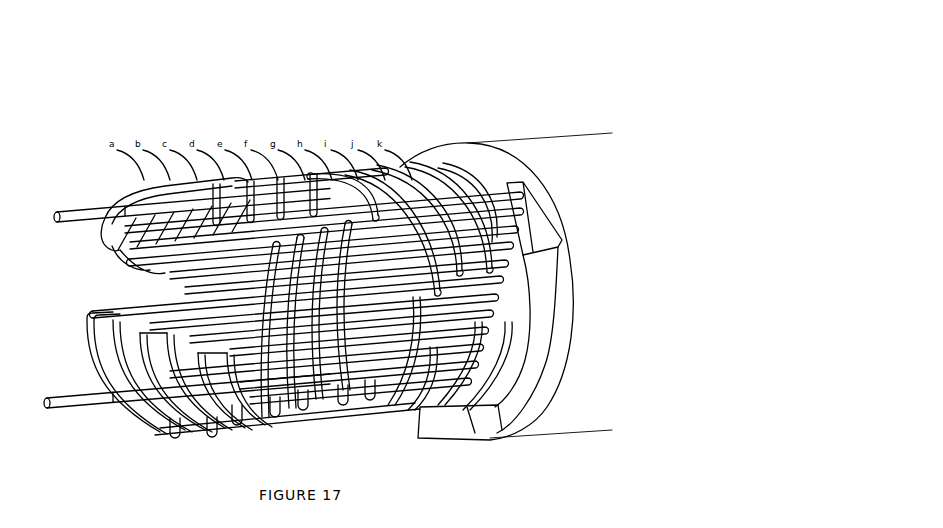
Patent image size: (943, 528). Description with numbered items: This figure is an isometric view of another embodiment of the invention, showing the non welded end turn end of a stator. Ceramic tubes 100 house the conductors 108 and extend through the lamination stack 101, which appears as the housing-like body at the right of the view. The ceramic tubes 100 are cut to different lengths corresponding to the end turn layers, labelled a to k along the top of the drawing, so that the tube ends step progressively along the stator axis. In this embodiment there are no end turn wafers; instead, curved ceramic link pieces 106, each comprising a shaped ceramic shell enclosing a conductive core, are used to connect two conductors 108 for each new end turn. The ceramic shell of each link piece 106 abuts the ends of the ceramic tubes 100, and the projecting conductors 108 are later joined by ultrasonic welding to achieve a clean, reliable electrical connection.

The ceramic tubes 100 is at (135, 317).
The lamination stack 101 is at (560, 403).
The curved ceramic link pieces 106 is at (90, 345).
The conductors 108 is at (62, 214).